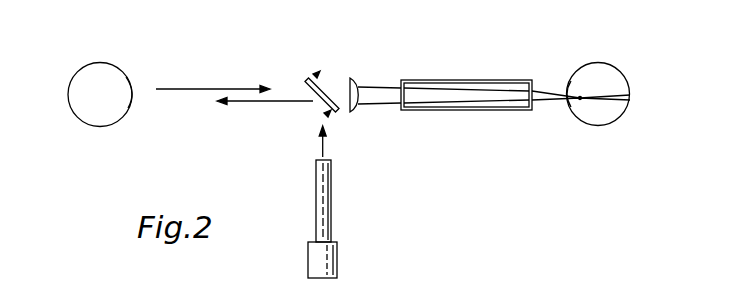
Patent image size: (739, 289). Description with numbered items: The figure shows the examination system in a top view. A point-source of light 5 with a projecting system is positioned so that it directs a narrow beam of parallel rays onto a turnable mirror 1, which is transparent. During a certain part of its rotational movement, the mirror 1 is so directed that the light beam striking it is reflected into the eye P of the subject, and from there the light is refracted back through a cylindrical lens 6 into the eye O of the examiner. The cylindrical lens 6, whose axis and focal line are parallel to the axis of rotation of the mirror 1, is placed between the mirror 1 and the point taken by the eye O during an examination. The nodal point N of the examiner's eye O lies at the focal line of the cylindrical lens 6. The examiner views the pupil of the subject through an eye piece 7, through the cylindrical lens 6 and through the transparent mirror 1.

The eye of the subject P is at (82, 77).
The mirror 1 is at (319, 78).
The point-source of light 5 is at (338, 258).
The cylindrical lens 6 is at (358, 112).
The eye piece 7 is at (475, 113).
The eye of the examiner O is at (605, 71).
The nodal point N is at (582, 103).